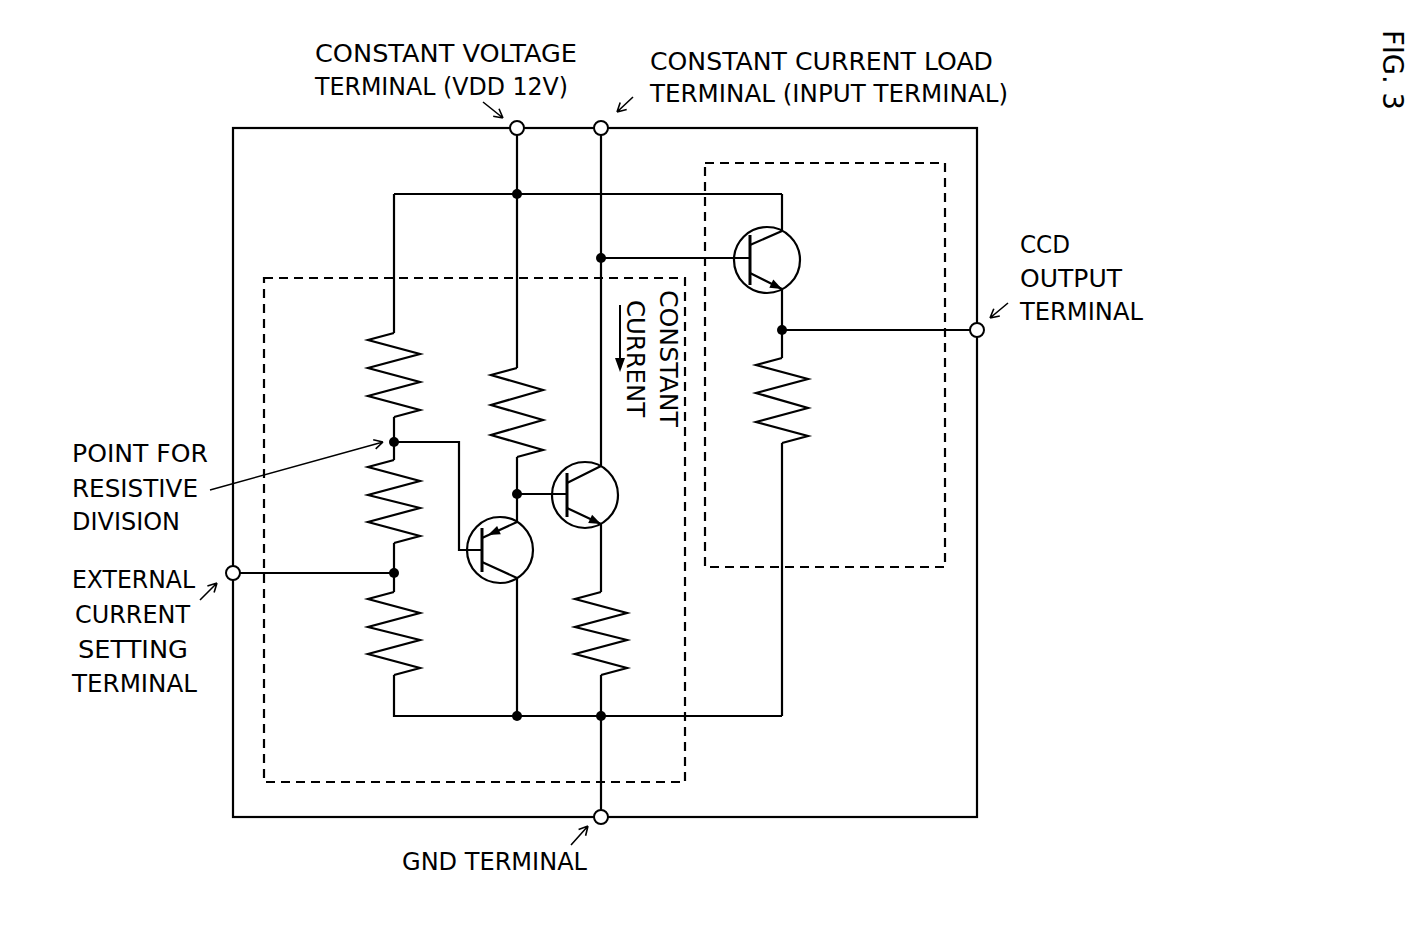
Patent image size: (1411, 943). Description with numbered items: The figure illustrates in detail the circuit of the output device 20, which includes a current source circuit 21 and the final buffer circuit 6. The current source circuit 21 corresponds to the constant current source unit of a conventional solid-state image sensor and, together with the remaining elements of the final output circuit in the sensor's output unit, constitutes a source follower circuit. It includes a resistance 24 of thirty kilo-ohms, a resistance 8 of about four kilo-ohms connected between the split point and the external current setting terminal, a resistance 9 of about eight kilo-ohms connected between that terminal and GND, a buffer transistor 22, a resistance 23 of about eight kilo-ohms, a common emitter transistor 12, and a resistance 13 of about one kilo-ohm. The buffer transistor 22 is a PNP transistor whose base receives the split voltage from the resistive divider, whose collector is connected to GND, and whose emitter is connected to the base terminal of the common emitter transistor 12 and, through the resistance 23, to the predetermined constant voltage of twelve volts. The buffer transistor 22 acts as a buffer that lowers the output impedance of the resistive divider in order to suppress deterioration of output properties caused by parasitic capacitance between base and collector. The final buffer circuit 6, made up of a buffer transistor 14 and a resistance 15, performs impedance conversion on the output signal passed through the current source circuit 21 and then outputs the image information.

The output device 20 is at (257, 134).
The current source circuit 21 is at (287, 296).
The final buffer circuit 6 is at (934, 557).
The resistance 24 is at (358, 378).
The resistance 8 is at (354, 515).
The resistance 9 is at (363, 673).
The resistance 23 is at (478, 416).
The resistance 13 is at (579, 672).
The resistance 15 is at (817, 391).
The buffer transistor 22 is at (495, 601).
The common emitter transistor 12 is at (623, 529).
The buffer transistor 14 is at (816, 236).